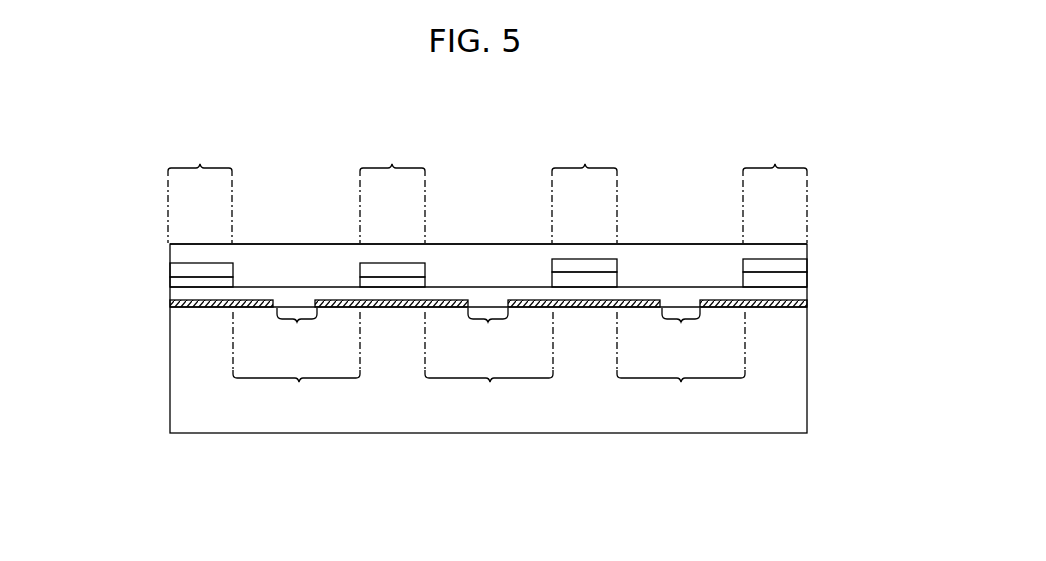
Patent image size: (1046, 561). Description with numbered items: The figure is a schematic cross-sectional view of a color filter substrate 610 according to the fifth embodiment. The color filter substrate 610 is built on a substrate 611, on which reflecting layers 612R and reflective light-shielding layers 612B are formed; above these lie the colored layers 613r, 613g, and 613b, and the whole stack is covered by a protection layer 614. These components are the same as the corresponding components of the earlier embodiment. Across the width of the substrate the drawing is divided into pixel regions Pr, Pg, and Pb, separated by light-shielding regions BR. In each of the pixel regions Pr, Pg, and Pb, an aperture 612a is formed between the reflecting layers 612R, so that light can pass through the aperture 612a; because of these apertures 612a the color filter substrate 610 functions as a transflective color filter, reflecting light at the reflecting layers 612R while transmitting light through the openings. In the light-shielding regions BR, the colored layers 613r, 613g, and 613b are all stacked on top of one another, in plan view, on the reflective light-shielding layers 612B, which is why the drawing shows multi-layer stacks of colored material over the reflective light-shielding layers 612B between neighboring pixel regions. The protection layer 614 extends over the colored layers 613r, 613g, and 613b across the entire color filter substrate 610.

The color filter substrate 610 is at (518, 112).
The substrate 611 is at (433, 420).
The reflecting layers 612R is at (253, 310).
The reflective light-shielding layers 612B is at (195, 307).
The apertures 612a is at (490, 335).
The colored layer (red) 613r is at (300, 288).
The colored layer (green) 613g is at (170, 268).
The colored layer (blue) 613b is at (170, 283).
The protection layer 614 is at (807, 247).
The light-shielding regions BR is at (487, 185).
The pixel region (red) Pr is at (296, 364).
The pixel region (green) Pg is at (489, 364).
The pixel region (blue) Pb is at (681, 364).